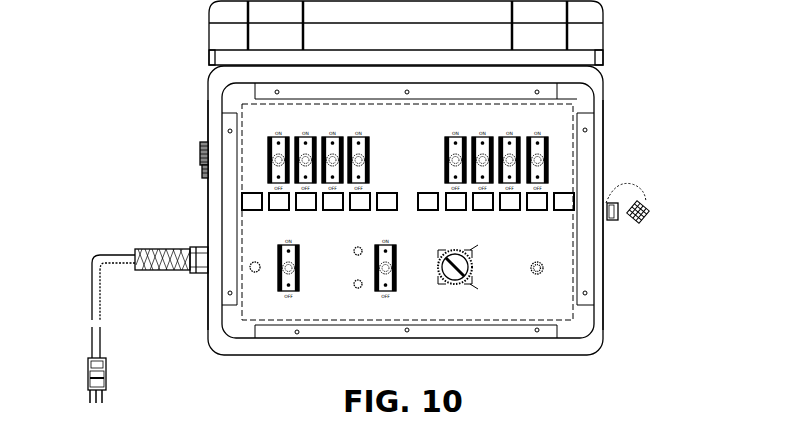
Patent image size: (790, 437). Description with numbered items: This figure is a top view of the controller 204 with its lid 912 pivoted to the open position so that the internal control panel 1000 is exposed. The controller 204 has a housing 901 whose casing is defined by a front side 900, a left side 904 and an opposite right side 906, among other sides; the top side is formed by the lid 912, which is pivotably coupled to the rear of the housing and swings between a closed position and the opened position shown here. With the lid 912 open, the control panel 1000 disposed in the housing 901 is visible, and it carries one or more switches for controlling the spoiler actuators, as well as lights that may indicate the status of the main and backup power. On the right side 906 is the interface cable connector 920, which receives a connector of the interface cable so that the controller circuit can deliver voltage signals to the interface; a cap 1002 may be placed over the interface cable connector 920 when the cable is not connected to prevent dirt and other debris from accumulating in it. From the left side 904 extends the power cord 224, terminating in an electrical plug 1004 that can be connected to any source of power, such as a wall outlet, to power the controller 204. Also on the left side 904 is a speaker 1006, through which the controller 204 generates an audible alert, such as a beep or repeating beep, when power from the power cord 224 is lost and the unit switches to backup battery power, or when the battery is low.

The controller 204 is at (163, 38).
The power cord 224 is at (98, 262).
The front side 900 is at (485, 355).
The housing 901 is at (603, 139).
The left side 904 is at (208, 123).
The right side 906 is at (603, 167).
The lid 912 is at (596, 38).
The interface cable connector 920 is at (613, 220).
The control panel 1000 is at (558, 143).
The cap 1002 is at (645, 213).
The electrical plug 1004 is at (97, 380).
The speaker 1006 is at (202, 162).